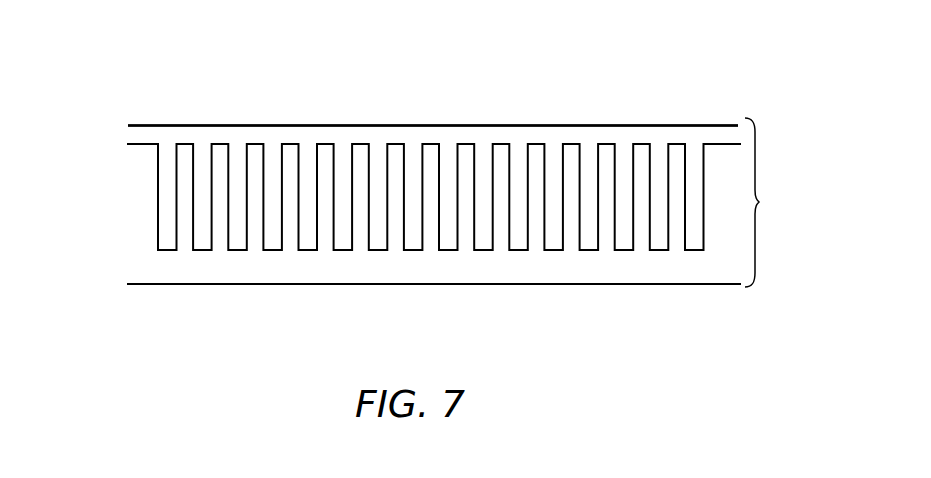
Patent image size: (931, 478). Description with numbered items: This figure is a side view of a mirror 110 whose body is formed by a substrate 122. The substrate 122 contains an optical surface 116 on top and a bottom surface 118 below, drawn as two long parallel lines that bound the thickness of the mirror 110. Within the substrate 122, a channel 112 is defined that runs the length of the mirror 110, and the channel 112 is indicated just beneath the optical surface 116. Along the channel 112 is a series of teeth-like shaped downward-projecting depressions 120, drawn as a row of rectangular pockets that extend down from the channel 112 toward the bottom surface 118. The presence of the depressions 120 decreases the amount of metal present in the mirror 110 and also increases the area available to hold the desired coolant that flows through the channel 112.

The mirror 110 is at (109, 54).
The channel 112 is at (136, 136).
The optical surface 116 is at (360, 125).
The bottom surface 118 is at (367, 284).
The downward-projecting depressions 120 is at (447, 150).
The substrate 122 is at (767, 202).